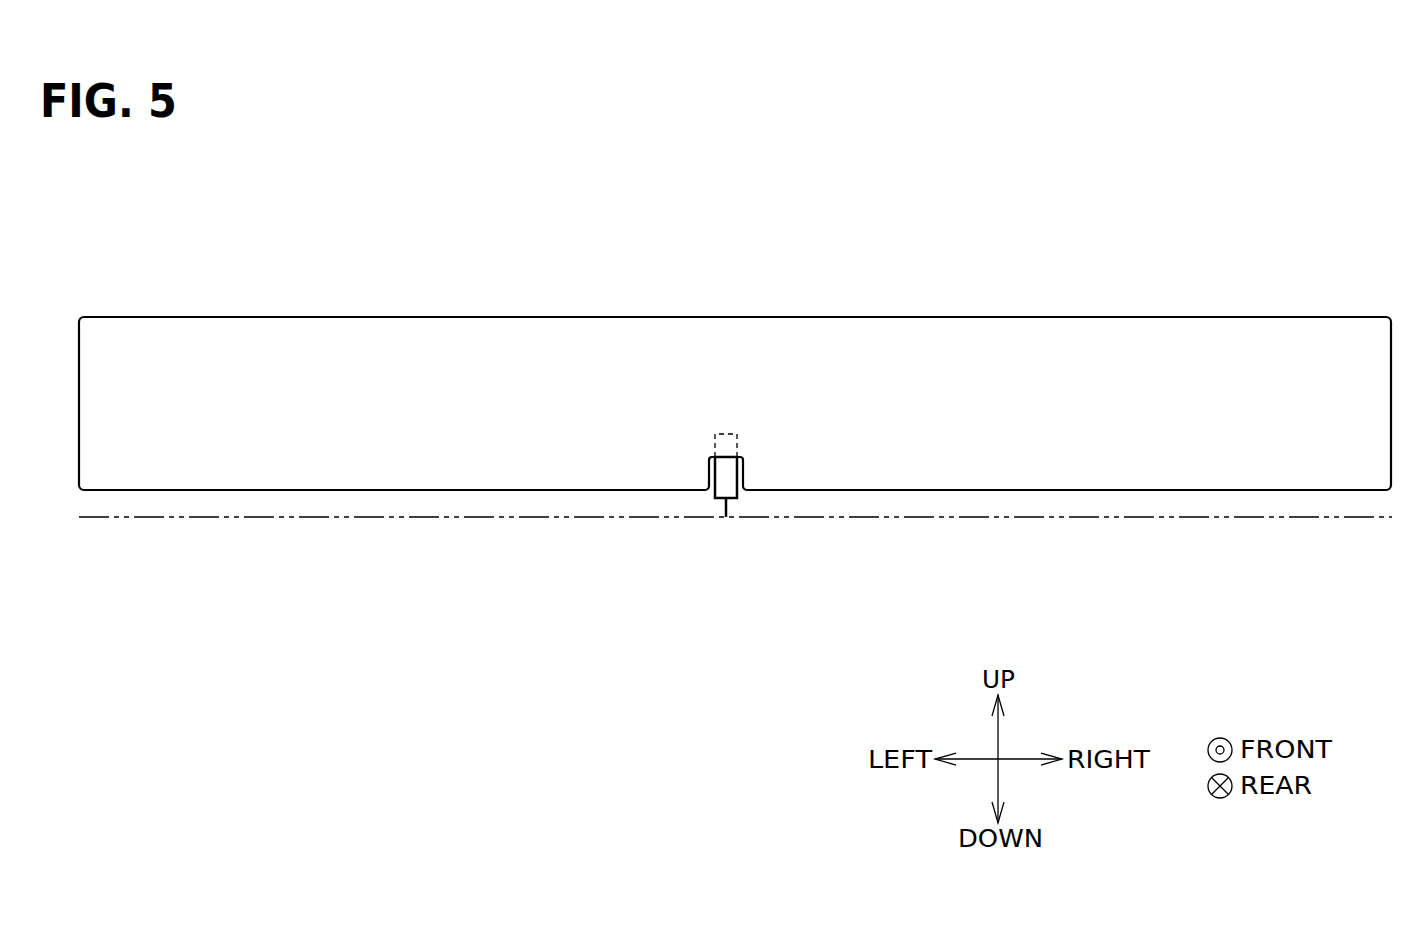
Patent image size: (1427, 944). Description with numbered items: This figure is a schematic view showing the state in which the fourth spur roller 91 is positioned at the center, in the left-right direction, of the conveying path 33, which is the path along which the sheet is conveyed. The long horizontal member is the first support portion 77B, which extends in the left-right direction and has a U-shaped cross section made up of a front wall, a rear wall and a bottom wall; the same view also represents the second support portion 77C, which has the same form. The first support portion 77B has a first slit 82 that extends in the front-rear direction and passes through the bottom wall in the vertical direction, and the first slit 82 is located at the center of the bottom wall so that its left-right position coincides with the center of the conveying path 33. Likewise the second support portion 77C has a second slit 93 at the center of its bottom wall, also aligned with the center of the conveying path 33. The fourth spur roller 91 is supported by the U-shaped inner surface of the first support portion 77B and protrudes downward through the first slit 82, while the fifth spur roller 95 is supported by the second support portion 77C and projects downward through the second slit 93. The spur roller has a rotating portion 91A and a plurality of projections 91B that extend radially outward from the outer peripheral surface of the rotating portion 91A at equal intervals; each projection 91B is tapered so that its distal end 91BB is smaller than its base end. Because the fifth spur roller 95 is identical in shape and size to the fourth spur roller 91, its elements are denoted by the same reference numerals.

The first support portion 77B is at (745, 371).
The second support portion 77C is at (1255, 315).
The conveying path 33 is at (1330, 520).
The fourth spur roller 91 is at (743, 440).
The fifth spur roller 95 is at (716, 440).
The first slit 82 is at (686, 523).
The second slit 93 is at (709, 488).
The rotating portion 91A is at (738, 436).
The projection 91B is at (725, 432).
The distal end 91BB is at (727, 434).